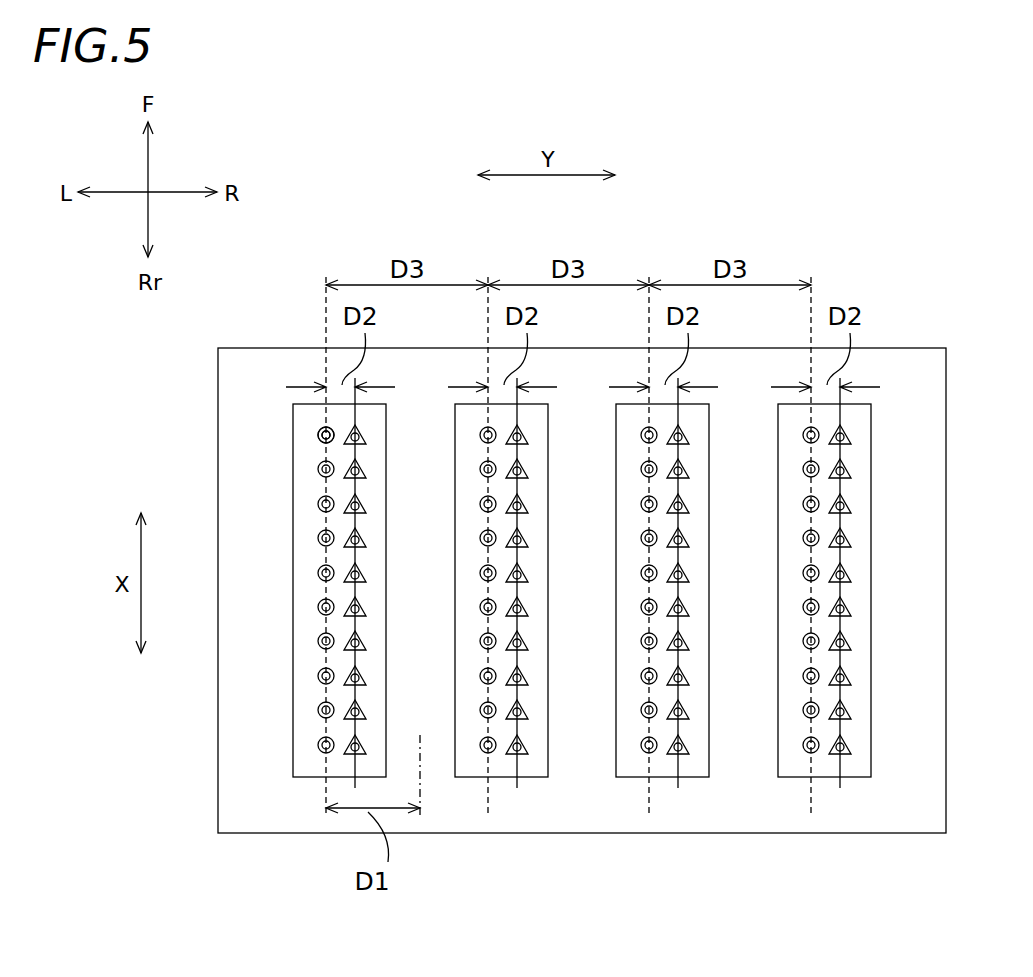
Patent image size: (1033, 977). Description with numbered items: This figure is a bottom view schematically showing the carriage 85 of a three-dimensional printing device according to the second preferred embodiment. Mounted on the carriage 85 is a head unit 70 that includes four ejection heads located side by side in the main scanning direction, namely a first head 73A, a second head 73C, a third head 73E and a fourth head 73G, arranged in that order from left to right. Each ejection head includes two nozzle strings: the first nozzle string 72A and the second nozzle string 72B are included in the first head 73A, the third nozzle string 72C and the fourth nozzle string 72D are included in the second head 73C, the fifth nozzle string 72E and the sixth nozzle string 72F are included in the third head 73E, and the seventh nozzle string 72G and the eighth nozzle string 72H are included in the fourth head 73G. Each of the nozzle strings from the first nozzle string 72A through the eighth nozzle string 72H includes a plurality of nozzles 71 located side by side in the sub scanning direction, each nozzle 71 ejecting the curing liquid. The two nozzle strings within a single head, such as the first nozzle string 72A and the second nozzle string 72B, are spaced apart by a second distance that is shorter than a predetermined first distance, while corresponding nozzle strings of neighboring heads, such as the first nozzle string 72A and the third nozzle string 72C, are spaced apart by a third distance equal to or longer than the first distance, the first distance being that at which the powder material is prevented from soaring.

The head unit 70 is at (287, 378).
The nozzle 71 is at (318, 435).
The first nozzle string 72A is at (245, 577).
The second nozzle string 72B is at (395, 590).
The third nozzle string 72C is at (444, 590).
The fourth nozzle string 72D is at (557, 590).
The fifth nozzle string 72E is at (605, 590).
The sixth nozzle string 72F is at (718, 590).
The seventh nozzle string 72G is at (767, 590).
The eighth nozzle string 72H is at (880, 590).
The first head 73A is at (301, 615).
The second head 73C is at (500, 615).
The third head 73E is at (661, 615).
The fourth head 73G is at (823, 615).
The carriage 85 is at (890, 348).